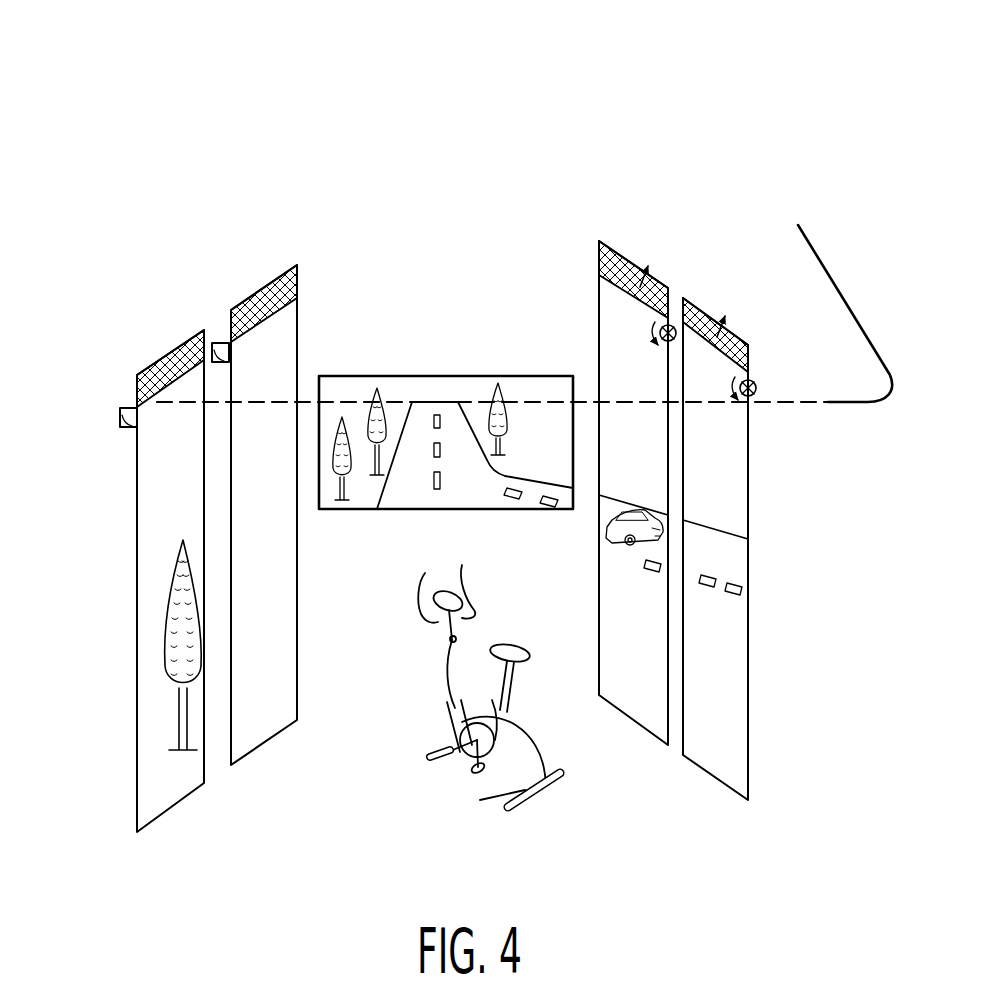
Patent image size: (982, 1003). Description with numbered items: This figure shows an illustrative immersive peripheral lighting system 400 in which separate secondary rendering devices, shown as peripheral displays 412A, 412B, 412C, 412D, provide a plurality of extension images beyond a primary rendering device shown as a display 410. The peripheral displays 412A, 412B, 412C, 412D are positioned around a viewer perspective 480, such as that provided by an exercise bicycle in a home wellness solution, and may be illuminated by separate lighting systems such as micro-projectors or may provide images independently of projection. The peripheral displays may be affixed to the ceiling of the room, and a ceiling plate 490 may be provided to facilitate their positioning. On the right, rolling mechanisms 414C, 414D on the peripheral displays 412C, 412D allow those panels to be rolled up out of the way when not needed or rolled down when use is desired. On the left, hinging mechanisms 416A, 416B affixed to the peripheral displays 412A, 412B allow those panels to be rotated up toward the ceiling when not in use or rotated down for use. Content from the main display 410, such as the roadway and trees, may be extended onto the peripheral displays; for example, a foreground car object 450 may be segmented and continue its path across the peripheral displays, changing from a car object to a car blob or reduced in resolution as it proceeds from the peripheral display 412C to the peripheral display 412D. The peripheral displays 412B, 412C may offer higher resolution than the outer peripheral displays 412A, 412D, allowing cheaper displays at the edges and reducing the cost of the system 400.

The immersive peripheral lighting system 400 is at (180, 127).
The display 410 is at (457, 375).
The peripheral display 412A is at (163, 356).
The peripheral display 412B is at (260, 288).
The peripheral display 412C is at (620, 270).
The peripheral display 412D is at (735, 335).
The rolling mechanism 414C is at (669, 324).
The rolling mechanism 414D is at (761, 390).
The hinging mechanism 416A is at (127, 413).
The hinging mechanism 416B is at (218, 342).
The foreground car object 450 is at (633, 515).
The viewer perspective 480 is at (517, 767).
The ceiling plate 490 is at (860, 393).